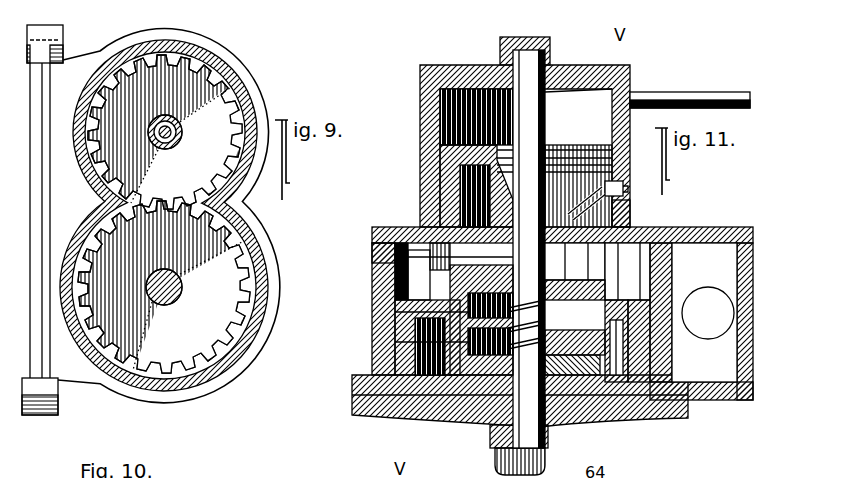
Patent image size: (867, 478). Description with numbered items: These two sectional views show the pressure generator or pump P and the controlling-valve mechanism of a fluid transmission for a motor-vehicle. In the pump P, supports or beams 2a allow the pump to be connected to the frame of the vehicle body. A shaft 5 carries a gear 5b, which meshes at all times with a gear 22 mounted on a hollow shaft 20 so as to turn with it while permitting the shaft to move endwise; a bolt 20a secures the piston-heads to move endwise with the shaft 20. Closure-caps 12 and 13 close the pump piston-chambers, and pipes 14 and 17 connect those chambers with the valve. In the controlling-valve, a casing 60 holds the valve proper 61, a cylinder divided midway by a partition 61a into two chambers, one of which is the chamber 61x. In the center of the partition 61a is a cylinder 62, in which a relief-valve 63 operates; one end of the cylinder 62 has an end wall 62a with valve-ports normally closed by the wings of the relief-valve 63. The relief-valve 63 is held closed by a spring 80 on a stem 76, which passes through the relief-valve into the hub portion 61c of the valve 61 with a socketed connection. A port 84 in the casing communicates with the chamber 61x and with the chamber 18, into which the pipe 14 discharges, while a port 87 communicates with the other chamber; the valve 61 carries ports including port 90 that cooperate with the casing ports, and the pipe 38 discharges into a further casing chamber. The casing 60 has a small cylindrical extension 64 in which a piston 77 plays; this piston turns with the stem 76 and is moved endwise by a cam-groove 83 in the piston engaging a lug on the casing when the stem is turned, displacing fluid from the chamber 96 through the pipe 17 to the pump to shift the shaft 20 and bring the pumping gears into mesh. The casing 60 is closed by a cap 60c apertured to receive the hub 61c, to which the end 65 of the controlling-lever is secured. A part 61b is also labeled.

In FIG. 9, the supports or beams 2a is at (42, 28).
In FIG. 9, the pressure generator or pump P is at (164, 203).
In FIG. 9, the chamber 18 is at (196, 394).
In FIG. 11, the chamber 18 is at (714, 300).
In FIG. 9, the shaft 20 is at (166, 133).
In FIG. 9, the bolt 20a is at (183, 132).
In FIG. 9, the gear 22 is at (186, 144).
In FIG. 9, the shaft 5 is at (166, 288).
In FIG. 9, the gear 5b is at (177, 290).
In FIG. 11, the cylindrical extension 64 is at (420, 102).
In FIG. 11, the chamber 96 is at (590, 100).
In FIG. 11, the stem 76 is at (540, 126).
In FIG. 11, the piston 77 is at (526, 186).
In FIG. 11, the pipe 38 is at (622, 189).
In FIG. 11, the pipe 17 is at (683, 93).
In FIG. 11, the cam-groove 83 is at (613, 213).
In FIG. 11, the port 87 is at (625, 251).
In FIG. 11, the casing 60 is at (395, 227).
In FIG. 11, the port 90 is at (373, 240).
In FIG. 11, the cap 60c is at (452, 409).
In FIG. 11, the hub portion 61c is at (556, 430).
In FIG. 11, the end of controlling-lever 65 is at (490, 438).
In FIG. 11, the pipe 14 is at (395, 250).
In FIG. 11, the valve proper 61 is at (381, 300).
In FIG. 11, the closure-cap 13 is at (400, 312).
In FIG. 11, the closure-cap 12 is at (400, 342).
In FIG. 11, the valve body part 61b is at (481, 311).
In FIG. 11, the relief-valve 63 is at (549, 300).
In FIG. 11, the end wall 62a is at (556, 301).
In FIG. 11, the cylinder 62 is at (575, 343).
In FIG. 11, the spring 80 is at (572, 367).
In FIG. 11, the partition 61a is at (625, 345).
In FIG. 11, the chamber 61x is at (608, 368).
In FIG. 11, the port 84 is at (668, 330).